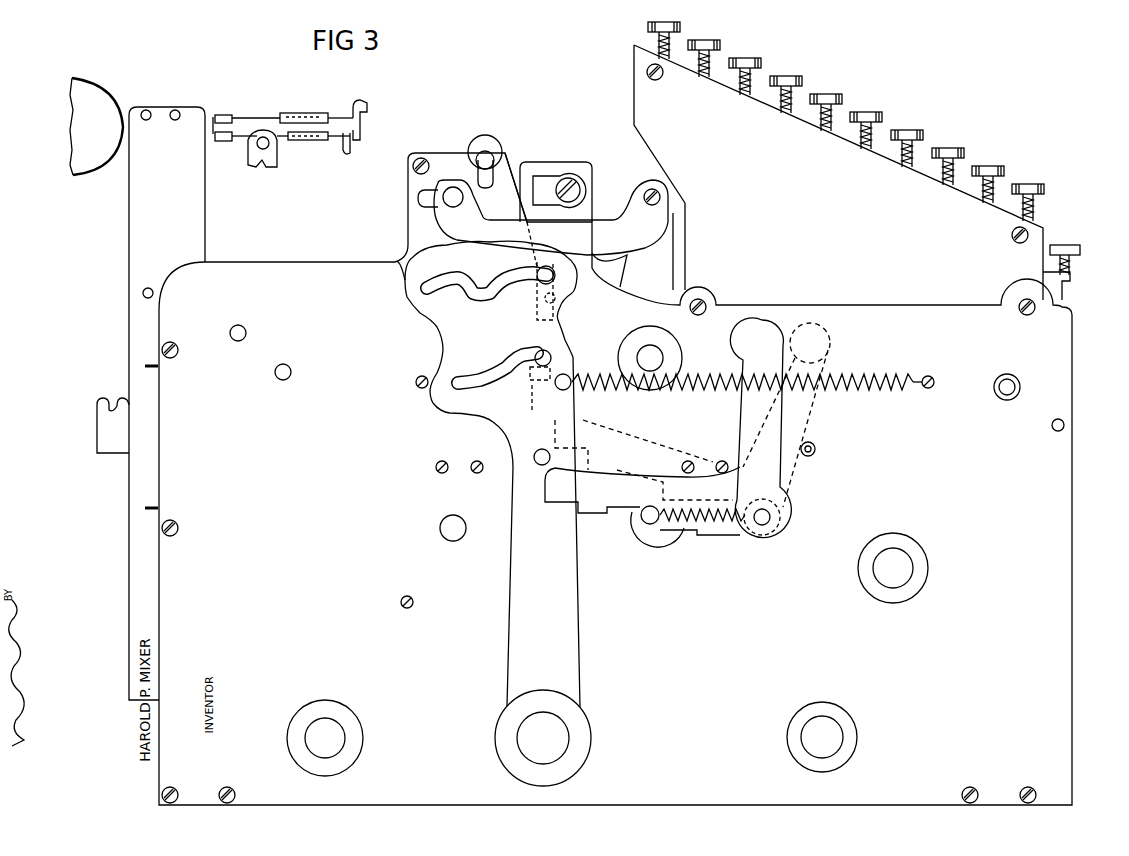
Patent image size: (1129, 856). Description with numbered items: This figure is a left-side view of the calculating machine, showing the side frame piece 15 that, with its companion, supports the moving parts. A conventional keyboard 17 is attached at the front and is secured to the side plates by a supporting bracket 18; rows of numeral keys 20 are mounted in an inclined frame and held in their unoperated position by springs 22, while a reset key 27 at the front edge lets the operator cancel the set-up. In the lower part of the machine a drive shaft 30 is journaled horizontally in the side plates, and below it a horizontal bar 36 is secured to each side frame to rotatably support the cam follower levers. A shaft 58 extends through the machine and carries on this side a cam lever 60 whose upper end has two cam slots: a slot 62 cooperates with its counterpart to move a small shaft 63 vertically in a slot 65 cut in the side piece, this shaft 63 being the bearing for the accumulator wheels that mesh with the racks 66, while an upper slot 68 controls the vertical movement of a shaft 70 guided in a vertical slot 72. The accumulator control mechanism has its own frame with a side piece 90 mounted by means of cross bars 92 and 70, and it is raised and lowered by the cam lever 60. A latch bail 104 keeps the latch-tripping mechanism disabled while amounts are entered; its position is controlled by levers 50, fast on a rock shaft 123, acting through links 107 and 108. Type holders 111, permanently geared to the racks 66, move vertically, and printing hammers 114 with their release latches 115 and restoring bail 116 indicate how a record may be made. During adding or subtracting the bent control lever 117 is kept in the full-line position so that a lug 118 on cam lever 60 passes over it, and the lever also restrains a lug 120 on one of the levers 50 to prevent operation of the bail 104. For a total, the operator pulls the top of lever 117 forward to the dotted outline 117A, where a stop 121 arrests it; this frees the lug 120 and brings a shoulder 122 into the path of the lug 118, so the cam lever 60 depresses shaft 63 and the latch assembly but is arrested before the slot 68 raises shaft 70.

The side frame piece 15 is at (177, 715).
The keyboard 17 is at (904, 99).
The supporting bracket 18 is at (1040, 228).
The numeral keys 20 is at (778, 76).
The springs 22 is at (640, 37).
The reset key 27 is at (1080, 250).
The drive shaft 30 is at (900, 570).
The horizontal bar 36 is at (828, 732).
The lever 50 is at (663, 257).
The shaft 58 is at (558, 740).
The cam lever 60 is at (570, 623).
The slot 62 is at (488, 380).
The shaft 63 is at (545, 350).
The slot 65 is at (543, 399).
The racks 66 is at (105, 425).
The upper slot 68 is at (415, 305).
The shaft 70 is at (537, 262).
The vertical slot 72 is at (558, 310).
The side piece 90 is at (542, 167).
The cross bar 92 is at (487, 155).
The latch bail 104 is at (567, 188).
The link 107 is at (627, 222).
The link 108 is at (533, 190).
The type holders 111 is at (160, 117).
The printing hammers 114 is at (247, 123).
The release latches 115 is at (348, 157).
The restoring bail 116 is at (263, 163).
The bent control lever 117 is at (775, 465).
The dotted outline 117A is at (812, 405).
The lug 118 is at (535, 452).
The lug 120 is at (643, 533).
The stop 121 is at (815, 449).
The shoulder 122 is at (578, 512).
The rock shaft 123 is at (655, 360).